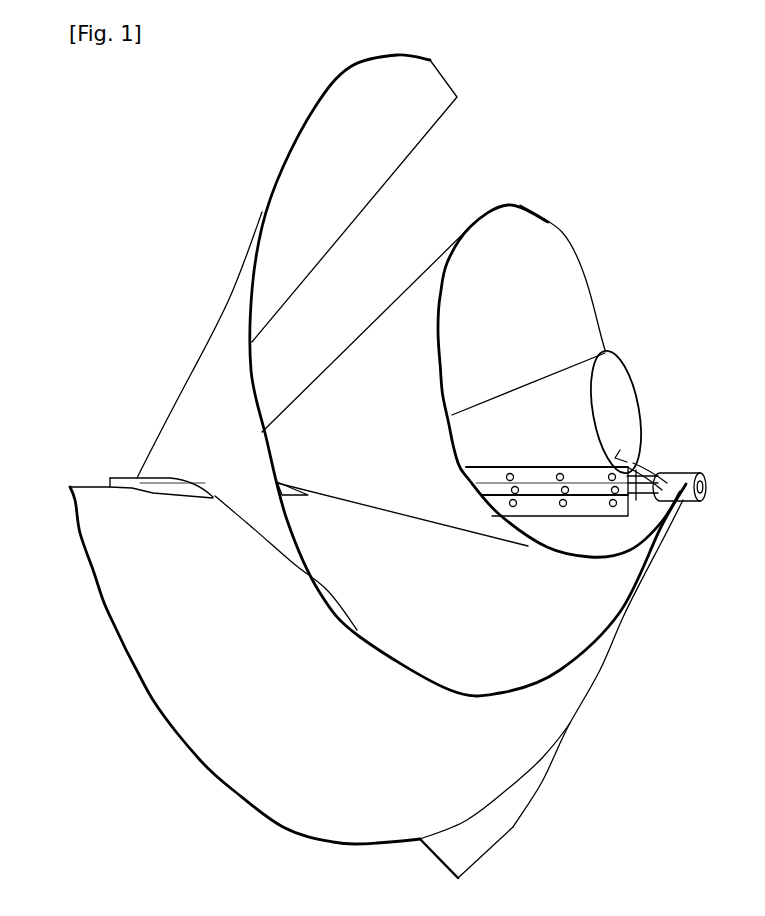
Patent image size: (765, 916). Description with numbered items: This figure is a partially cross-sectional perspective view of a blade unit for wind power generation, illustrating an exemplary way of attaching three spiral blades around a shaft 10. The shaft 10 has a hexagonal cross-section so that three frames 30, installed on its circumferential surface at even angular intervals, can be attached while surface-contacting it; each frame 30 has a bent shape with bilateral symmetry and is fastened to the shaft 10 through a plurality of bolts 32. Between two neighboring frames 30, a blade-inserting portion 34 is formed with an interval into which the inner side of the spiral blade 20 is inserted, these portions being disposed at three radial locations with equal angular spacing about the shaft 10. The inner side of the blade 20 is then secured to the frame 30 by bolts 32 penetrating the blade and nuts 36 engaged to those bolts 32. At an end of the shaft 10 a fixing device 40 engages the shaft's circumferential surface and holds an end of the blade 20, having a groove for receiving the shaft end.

The shaft 10 is at (650, 465).
The spiral blade 20 is at (215, 375).
The frame 30 is at (540, 477).
The bolt 32 is at (613, 507).
The blade-inserting portion 34 is at (648, 482).
The nut 36 is at (563, 507).
The fixing device 40 is at (706, 477).